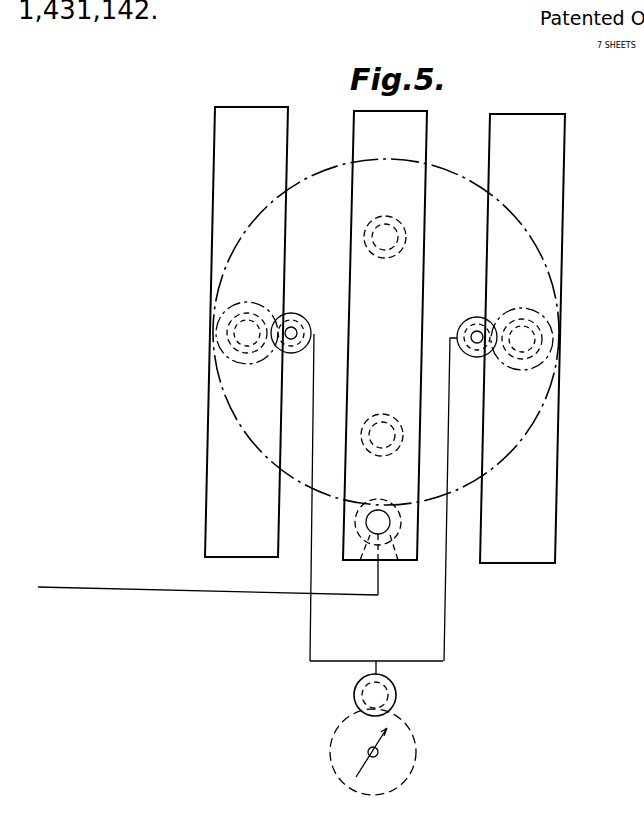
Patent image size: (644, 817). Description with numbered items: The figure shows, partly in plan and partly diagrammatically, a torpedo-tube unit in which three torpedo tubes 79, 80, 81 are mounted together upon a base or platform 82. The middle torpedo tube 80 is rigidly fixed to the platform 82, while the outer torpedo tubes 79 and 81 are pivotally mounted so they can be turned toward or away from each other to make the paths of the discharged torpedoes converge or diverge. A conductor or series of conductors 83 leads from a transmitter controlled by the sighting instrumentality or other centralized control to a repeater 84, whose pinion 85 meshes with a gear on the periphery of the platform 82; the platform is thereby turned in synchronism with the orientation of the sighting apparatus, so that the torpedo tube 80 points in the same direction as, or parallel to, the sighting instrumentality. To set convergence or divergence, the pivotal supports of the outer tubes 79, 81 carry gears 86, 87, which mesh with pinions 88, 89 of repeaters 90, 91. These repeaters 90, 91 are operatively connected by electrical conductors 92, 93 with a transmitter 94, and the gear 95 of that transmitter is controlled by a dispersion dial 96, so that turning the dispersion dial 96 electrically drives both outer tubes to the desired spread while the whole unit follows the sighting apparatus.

The torpedo tube 79 is at (221, 130).
The torpedo tube 80 is at (358, 130).
The torpedo tube 81 is at (498, 135).
The base or platform 82 is at (331, 174).
The conductor 83 is at (107, 589).
The repeater 84 is at (398, 560).
The pinion 85 is at (361, 561).
The gear 86 is at (245, 303).
The gear 87 is at (517, 310).
The pinion 88 is at (298, 318).
The pinion 89 is at (474, 322).
The repeater 90 is at (326, 321).
The repeater 91 is at (458, 333).
The electrical conductor 92 is at (310, 625).
The electrical conductor 93 is at (444, 629).
The transmitter 94 is at (355, 699).
The gear 95 is at (396, 697).
The dispersion dial 96 is at (416, 739).